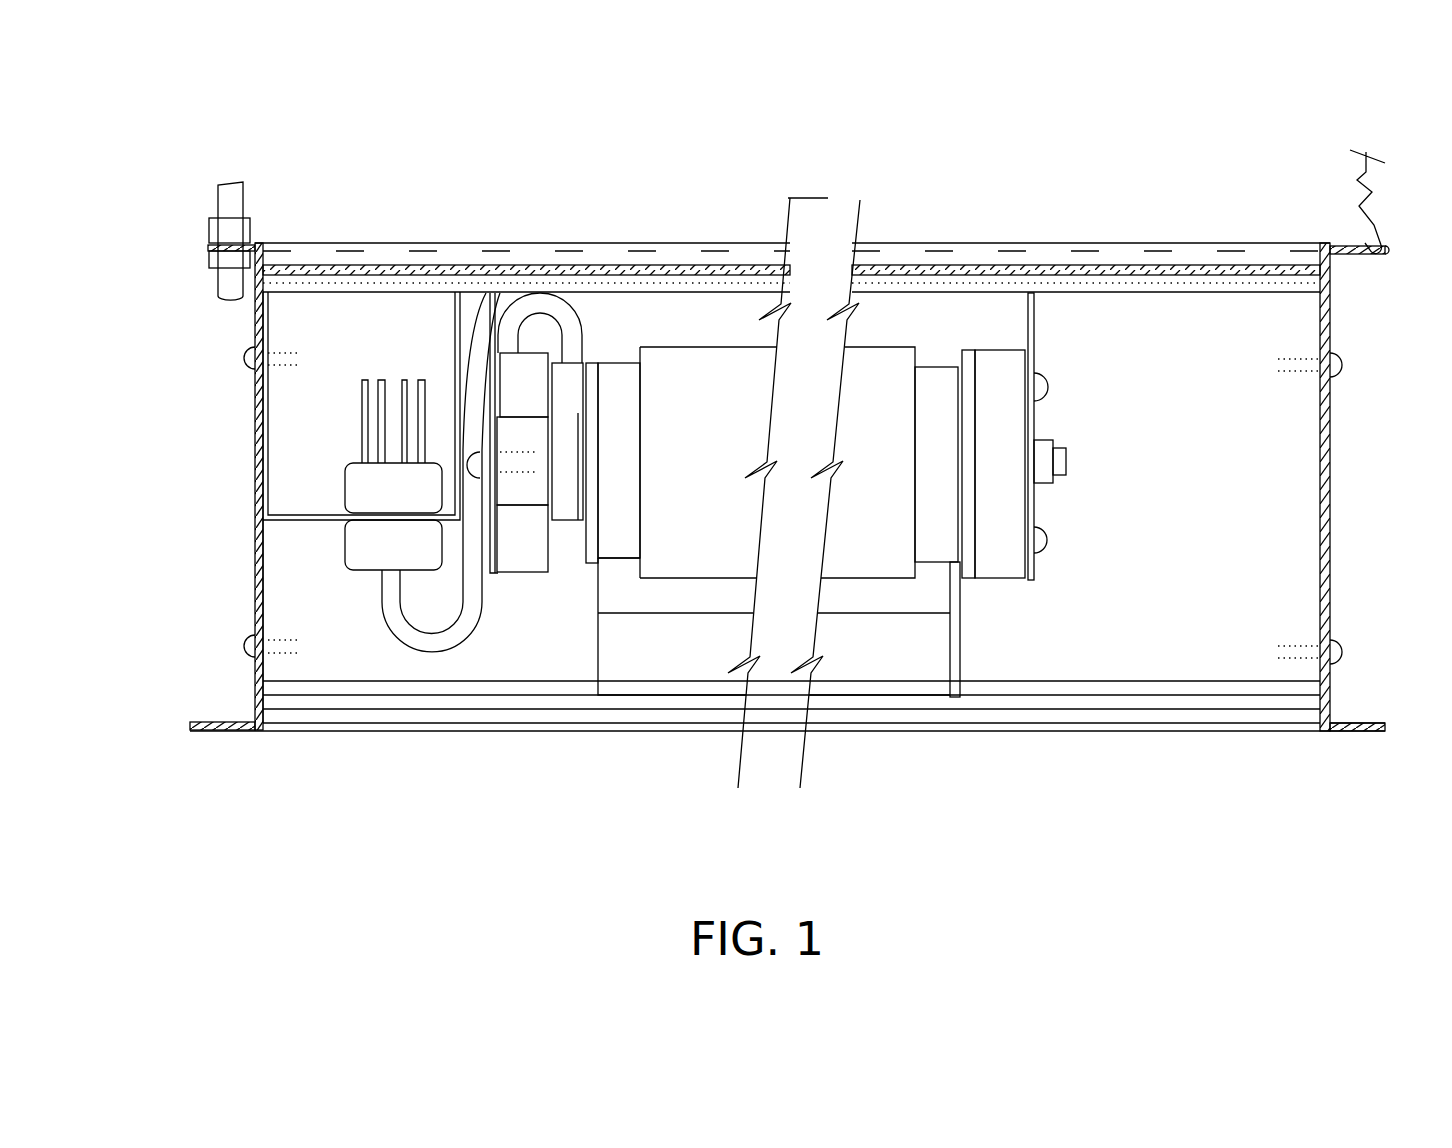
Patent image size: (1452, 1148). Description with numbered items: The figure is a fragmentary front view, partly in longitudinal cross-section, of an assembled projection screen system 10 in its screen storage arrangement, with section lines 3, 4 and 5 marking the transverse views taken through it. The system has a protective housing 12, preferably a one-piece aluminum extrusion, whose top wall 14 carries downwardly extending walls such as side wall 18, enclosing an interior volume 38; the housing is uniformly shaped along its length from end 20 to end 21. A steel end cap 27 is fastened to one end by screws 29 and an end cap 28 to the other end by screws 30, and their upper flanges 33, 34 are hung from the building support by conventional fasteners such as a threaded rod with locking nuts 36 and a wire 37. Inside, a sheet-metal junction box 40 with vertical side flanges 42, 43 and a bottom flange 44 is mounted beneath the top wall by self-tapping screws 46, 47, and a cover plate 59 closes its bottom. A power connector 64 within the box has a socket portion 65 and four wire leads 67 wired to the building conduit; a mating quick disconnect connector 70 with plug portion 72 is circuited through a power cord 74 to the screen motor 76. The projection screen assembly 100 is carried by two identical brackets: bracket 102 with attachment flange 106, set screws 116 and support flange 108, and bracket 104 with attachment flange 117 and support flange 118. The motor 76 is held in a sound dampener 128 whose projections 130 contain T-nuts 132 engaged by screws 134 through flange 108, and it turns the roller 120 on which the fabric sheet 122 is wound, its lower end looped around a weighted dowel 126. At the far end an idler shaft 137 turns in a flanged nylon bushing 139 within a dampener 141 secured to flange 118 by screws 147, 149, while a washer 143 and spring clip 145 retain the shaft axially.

The projection screen system 10 is at (1008, 137).
The protective housing 12 is at (897, 233).
The top wall 14 is at (737, 268).
The side wall 18 is at (1211, 653).
The end 20 is at (264, 240).
The end 21 is at (1322, 247).
The end cap 27 is at (253, 592).
The end cap 28 is at (1327, 510).
The screws 29 is at (245, 647).
The screws 30 is at (1345, 655).
The upper flange 33 is at (210, 245).
The upper flange 34 is at (1387, 248).
The threaded rod with locking nuts 36 is at (230, 202).
The wire 37 is at (1377, 212).
The interior volume 38 is at (1252, 583).
The junction box 40 is at (288, 468).
The vertical side flange 42 is at (263, 413).
The vertical side flange 43 is at (457, 352).
The bottom flange 44 is at (277, 513).
The self-tapping screw 46 is at (322, 258).
The self-tapping screw 47 is at (398, 258).
The junction box cover plate 59 is at (273, 525).
The power connector 64 is at (347, 450).
The socket portion 65 is at (387, 500).
The wire leads 67 is at (423, 380).
The quick disconnect power connector 70 is at (362, 585).
The plug portion 72 is at (387, 560).
The power cord 74 is at (430, 650).
The screen motor 76 is at (572, 380).
The projection screen assembly 100 is at (1032, 635).
The screen mount bracket 102 is at (487, 291).
The screen mount bracket 104 is at (1040, 320).
The attachment flange 106 is at (528, 260).
The support flange 108 is at (495, 570).
The set screws 116 is at (585, 260).
The attachment flange 117 is at (1005, 258).
The support flange 118 is at (1033, 307).
The roller 120 is at (935, 395).
The fabric sheet 122 is at (892, 373).
The dowel 126 is at (912, 660).
The sound dampener 128 is at (525, 560).
The lateral projections 130 is at (515, 417).
The T-nuts 132 is at (538, 415).
The screws 134 is at (471, 575).
The idler shaft 137 is at (1067, 460).
The flanged nylon bushing 139 is at (957, 697).
The dampener 141 is at (1003, 550).
The washer 143 is at (1040, 497).
The spring clip 145 is at (1050, 470).
The screw 147 is at (1047, 382).
The screw 149 is at (1045, 515).
The section line 3 is at (303, 782).
The section line 4 is at (710, 783).
The section line 5 is at (1135, 785).